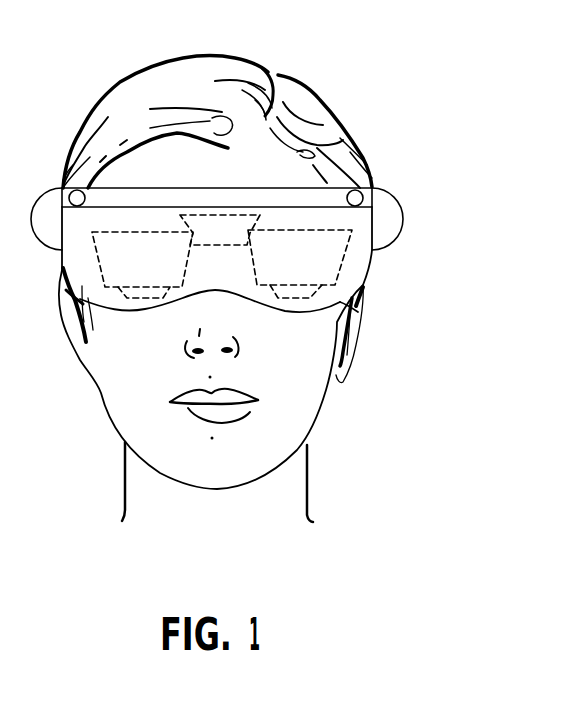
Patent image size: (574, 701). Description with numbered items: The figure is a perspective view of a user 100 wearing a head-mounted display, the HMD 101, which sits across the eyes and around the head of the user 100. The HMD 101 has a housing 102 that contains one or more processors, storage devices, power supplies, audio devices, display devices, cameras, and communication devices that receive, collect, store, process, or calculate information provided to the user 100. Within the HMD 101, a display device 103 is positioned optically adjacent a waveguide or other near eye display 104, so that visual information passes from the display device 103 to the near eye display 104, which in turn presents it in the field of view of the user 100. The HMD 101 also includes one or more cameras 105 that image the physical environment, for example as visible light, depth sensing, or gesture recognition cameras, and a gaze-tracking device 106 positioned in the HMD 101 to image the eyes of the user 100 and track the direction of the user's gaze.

The user 100 is at (381, 47).
The HMD 101 is at (411, 101).
The housing 102 is at (406, 166).
The display device 103 is at (262, 217).
The near eye display 104 is at (342, 262).
The camera 105 is at (364, 201).
The gaze-tracking device 106 is at (358, 312).